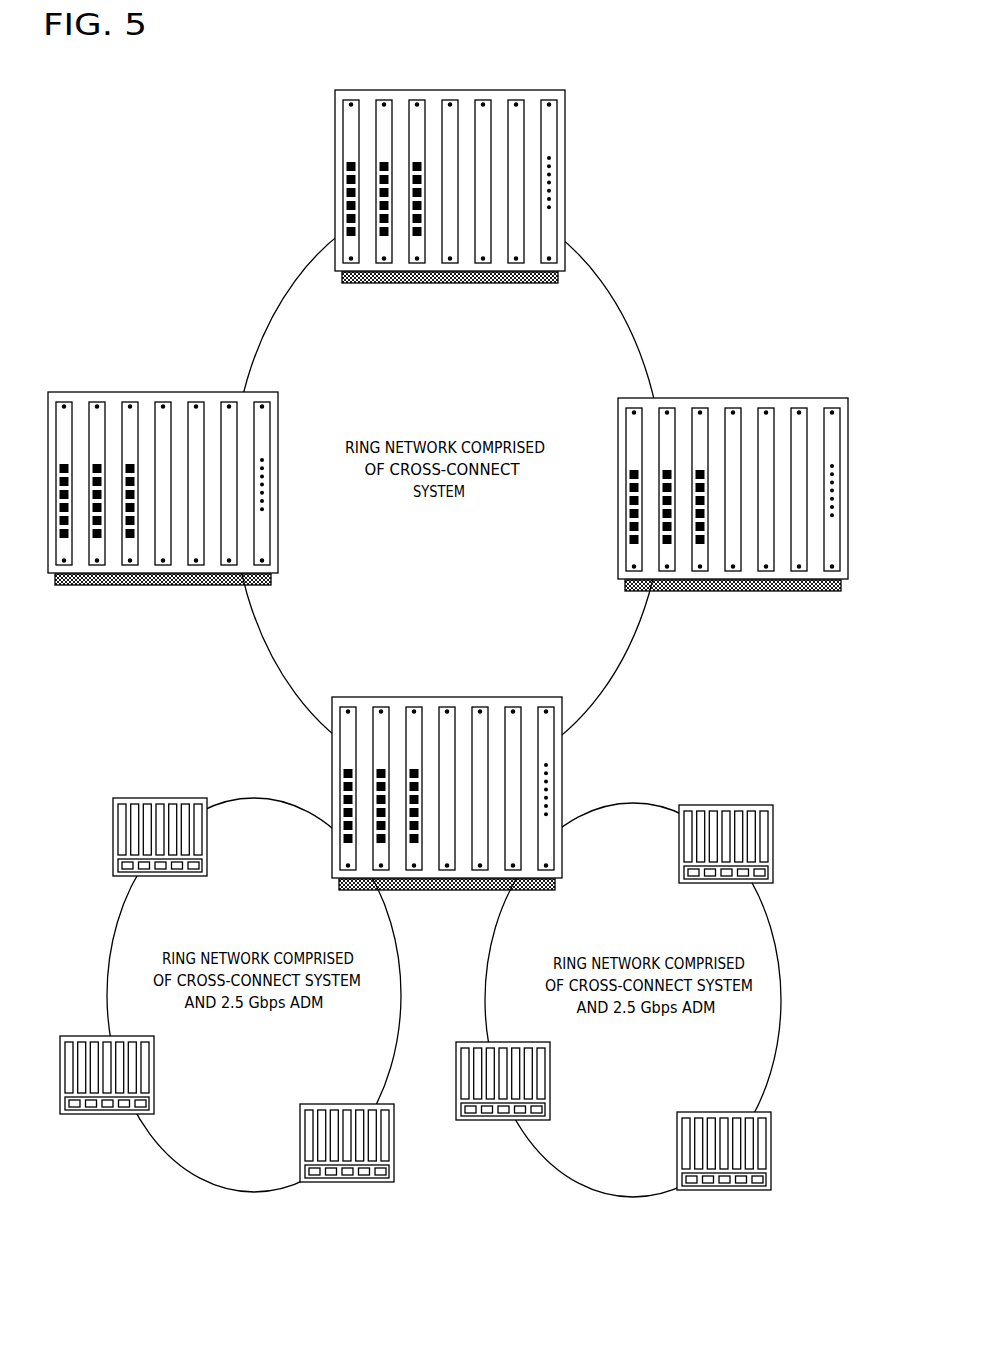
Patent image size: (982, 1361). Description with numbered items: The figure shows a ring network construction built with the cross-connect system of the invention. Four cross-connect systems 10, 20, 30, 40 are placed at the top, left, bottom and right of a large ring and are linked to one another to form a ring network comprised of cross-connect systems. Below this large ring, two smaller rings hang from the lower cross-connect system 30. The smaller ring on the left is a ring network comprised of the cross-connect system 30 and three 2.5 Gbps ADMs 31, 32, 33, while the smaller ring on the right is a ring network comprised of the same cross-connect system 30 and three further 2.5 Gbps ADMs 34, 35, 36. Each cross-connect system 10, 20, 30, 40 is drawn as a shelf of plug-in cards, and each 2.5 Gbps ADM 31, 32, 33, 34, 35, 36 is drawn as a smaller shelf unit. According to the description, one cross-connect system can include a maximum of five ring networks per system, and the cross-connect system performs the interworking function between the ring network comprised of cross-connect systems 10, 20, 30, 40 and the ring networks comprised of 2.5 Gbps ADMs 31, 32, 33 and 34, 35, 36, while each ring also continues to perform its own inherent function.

The cross-connect system 10 is at (565, 168).
The cross-connect system 20 is at (182, 392).
The cross-connect system 30 is at (562, 764).
The cross-connect system 40 is at (776, 397).
The 2.5 Gbps ADM 31 is at (162, 798).
The 2.5 Gbps ADM 32 is at (77, 1036).
The 2.5 Gbps ADM 33 is at (339, 1104).
The 2.5 Gbps ADM 34 is at (468, 1042).
The 2.5 Gbps ADM 35 is at (774, 841).
The 2.5 Gbps ADM 36 is at (772, 1152).